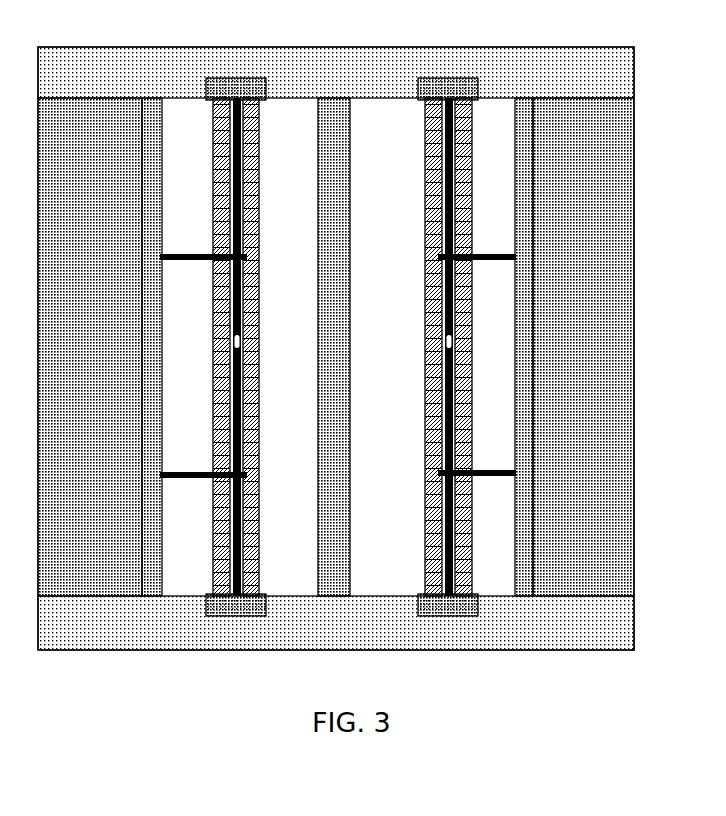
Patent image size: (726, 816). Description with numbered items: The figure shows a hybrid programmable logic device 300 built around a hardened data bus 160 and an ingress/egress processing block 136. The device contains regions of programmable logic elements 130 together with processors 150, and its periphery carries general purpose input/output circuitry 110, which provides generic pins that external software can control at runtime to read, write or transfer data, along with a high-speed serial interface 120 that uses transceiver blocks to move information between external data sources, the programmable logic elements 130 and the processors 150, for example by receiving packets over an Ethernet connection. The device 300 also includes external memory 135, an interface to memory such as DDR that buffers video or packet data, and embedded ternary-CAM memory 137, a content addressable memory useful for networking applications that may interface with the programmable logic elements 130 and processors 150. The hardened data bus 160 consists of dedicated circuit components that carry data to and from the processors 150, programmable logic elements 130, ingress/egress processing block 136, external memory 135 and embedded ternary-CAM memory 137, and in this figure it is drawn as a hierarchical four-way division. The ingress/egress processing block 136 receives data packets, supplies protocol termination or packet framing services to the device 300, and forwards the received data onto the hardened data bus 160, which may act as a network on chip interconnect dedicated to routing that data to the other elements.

The hybrid programmable logic device 300 is at (350, 28).
The general purpose input/output circuitry 110 is at (353, 82).
The high-speed serial interface 120 is at (75, 358).
The programmable logic elements 130 is at (173, 158).
The external memory 135 is at (342, 347).
The ingress/egress processing block 136 is at (337, 347).
The embedded ternary-CAM memory 137 is at (334, 347).
The processors 150 is at (230, 503).
The hardened data bus 160 is at (166, 254).